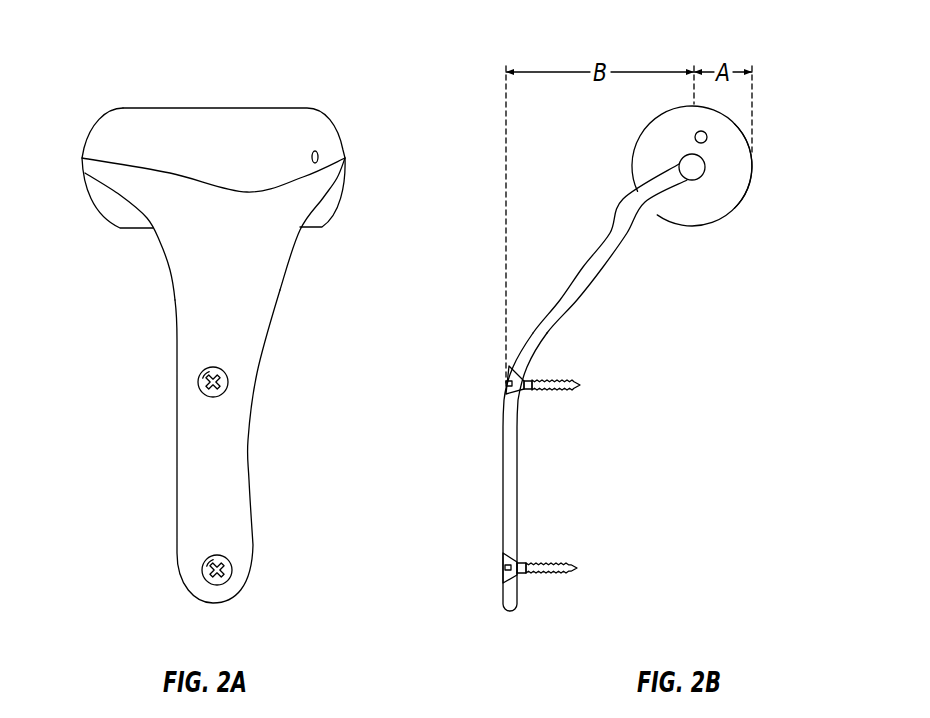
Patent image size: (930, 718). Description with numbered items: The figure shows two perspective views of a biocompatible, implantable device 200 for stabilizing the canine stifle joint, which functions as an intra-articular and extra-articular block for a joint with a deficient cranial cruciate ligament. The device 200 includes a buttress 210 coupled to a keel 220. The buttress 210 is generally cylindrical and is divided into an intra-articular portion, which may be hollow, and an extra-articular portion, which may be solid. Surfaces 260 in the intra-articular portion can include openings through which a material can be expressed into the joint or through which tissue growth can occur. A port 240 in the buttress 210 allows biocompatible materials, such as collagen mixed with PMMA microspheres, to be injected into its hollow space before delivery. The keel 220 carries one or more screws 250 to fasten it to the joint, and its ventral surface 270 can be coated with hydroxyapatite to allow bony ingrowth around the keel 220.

In FIG. 2A, the implantable device 200 is at (131, 46).
In FIG. 2B, the implantable device 200 is at (569, 46).
In FIG. 2A, the buttress 210 is at (162, 118).
In FIG. 2B, the buttress 210 is at (640, 157).
In FIG. 2A, the keel 220 is at (247, 271).
In FIG. 2B, the keel 220 is at (573, 297).
In FIG. 2A, the port 240 is at (320, 155).
In FIG. 2B, the port 240 is at (695, 134).
In FIG. 2A, the screw 250 is at (228, 382).
In FIG. 2B, the screw 250 is at (559, 383).
In FIG. 2B, the surfaces 260 is at (753, 173).
In FIG. 2A, the ventral surface 270 is at (192, 292).
In FIG. 2B, the ventral surface 270 is at (502, 495).